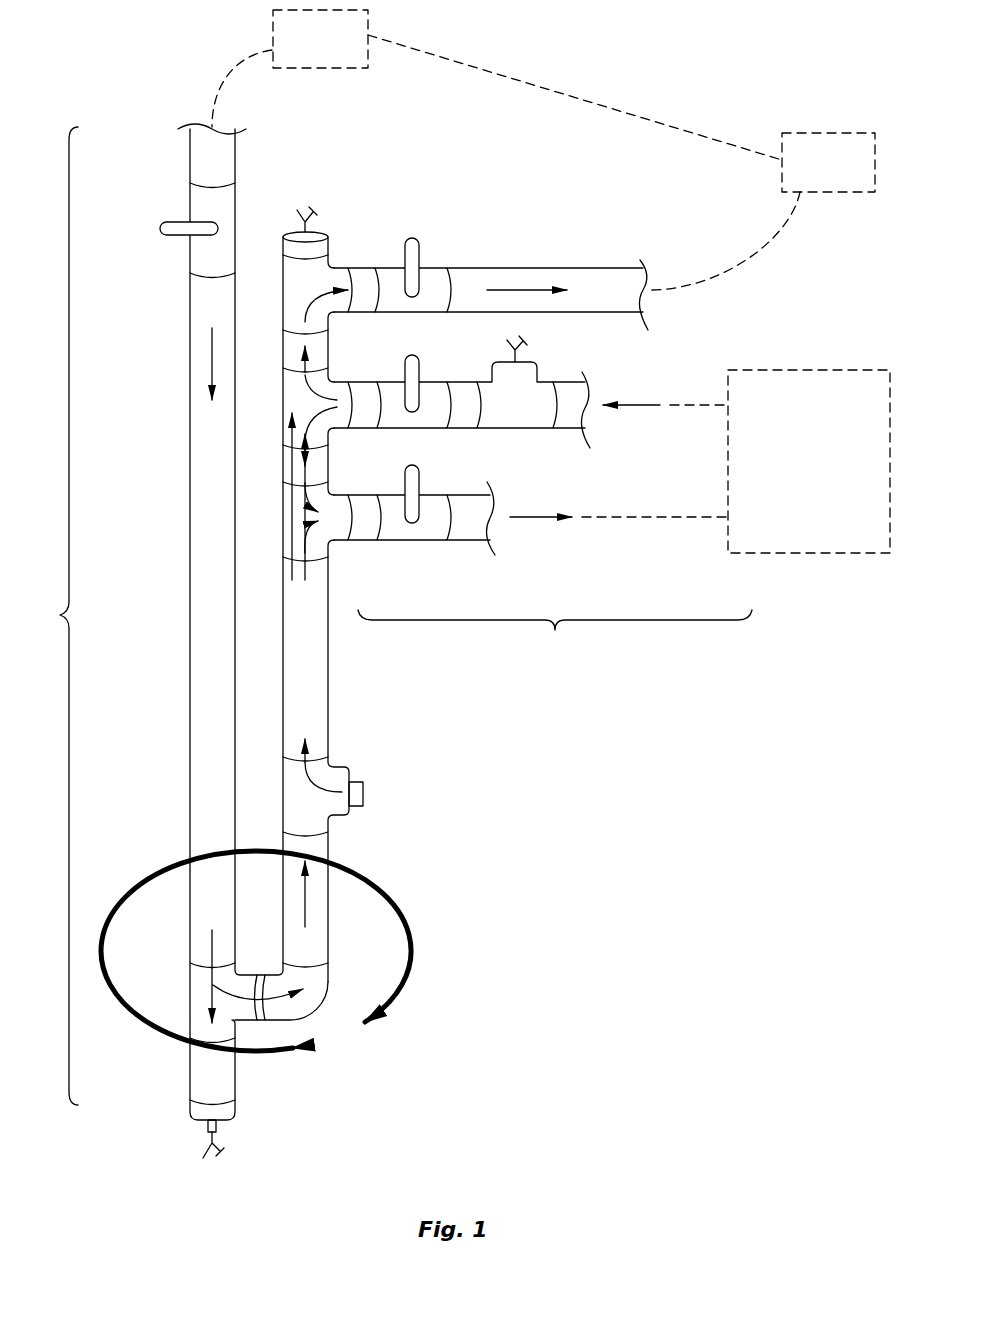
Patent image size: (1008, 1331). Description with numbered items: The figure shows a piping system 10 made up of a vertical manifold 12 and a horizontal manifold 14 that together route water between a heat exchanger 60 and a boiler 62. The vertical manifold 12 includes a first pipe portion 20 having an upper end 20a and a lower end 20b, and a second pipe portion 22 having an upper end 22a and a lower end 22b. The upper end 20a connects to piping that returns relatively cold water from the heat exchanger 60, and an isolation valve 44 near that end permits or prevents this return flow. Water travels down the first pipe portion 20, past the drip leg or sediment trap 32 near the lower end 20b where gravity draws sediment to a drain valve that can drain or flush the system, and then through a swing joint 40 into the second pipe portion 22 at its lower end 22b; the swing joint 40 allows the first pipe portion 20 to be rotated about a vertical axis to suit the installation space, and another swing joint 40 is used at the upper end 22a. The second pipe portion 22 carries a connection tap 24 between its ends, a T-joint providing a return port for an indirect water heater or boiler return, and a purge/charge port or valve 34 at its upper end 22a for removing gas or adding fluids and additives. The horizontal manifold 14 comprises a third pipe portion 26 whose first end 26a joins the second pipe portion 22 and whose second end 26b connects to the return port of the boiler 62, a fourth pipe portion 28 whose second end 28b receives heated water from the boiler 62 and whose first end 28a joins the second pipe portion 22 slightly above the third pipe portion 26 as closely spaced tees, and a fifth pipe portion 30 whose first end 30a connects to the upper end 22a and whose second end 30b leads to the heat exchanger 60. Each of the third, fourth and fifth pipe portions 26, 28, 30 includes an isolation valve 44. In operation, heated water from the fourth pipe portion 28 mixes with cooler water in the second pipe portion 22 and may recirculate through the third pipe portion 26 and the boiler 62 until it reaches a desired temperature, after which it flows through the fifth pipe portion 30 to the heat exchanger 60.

The system 10 is at (463, 581).
The vertical manifold 12 is at (225, 641).
The horizontal manifold 14 is at (543, 434).
The first pipe portion 20 is at (195, 673).
The first end of first pipe portion 20a is at (195, 283).
The second end of first pipe portion 20b is at (193, 940).
The second pipe portion 22 is at (316, 695).
The first end of second pipe portion 22a is at (320, 357).
The second end of second pipe portion 22b is at (312, 948).
The connection tap 24 is at (364, 792).
The third pipe portion 26 is at (458, 543).
The first end of third pipe portion 26a is at (358, 542).
The second end of third pipe portion 26b is at (492, 545).
The fourth pipe portion 28 is at (460, 430).
The first end of fourth pipe portion 28a is at (358, 427).
The second end of fourth pipe portion 28b is at (570, 430).
The fifth pipe portion 30 is at (540, 268).
The first end of fifth pipe portion 30a is at (358, 266).
The second end of fifth pipe portion 30b is at (643, 268).
The drip leg or sediment trap 32 is at (215, 1145).
The purge/charge port or valve 34 is at (297, 230).
The swing joint 40 is at (290, 352).
The isolation valve 44 is at (163, 222).
The heat exchanger 60 is at (273, 30).
The boiler 62 is at (825, 553).